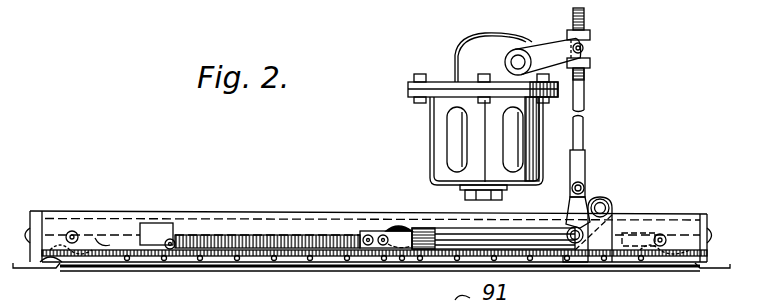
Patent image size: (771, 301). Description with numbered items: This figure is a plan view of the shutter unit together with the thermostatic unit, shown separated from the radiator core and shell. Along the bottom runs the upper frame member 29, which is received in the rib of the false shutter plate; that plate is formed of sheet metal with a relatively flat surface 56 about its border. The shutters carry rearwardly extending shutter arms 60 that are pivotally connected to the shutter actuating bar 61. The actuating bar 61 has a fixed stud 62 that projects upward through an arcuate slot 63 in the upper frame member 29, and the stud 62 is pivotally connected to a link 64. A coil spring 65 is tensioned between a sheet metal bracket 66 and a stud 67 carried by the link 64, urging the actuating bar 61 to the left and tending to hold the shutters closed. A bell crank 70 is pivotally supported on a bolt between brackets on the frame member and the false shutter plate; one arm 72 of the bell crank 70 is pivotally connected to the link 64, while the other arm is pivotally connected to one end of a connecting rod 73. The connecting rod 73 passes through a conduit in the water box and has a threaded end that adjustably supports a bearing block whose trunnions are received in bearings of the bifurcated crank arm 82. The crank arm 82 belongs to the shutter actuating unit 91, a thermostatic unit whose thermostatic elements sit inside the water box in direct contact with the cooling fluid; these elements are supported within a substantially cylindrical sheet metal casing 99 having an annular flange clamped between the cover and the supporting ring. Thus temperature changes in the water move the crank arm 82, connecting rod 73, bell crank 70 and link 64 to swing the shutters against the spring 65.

The upper frame member 29 is at (244, 225).
The relatively flat surface 56 is at (667, 265).
The shutter arms 60 is at (64, 230).
The shutter actuating bar 61 is at (104, 238).
The fixed stud 62 is at (382, 234).
The arcuate slot 63 is at (400, 222).
The link 64 is at (437, 232).
The coil spring 65 is at (301, 234).
The sheet metal bracket 66 is at (156, 224).
The stud 67 is at (366, 235).
The bell crank 70 is at (602, 204).
The arm of bell crank 72 is at (578, 216).
The connecting rod 73 is at (581, 131).
The bifurcated crank arm 82 is at (547, 47).
The shutter actuating unit 91 is at (456, 56).
The casing 99 is at (433, 137).